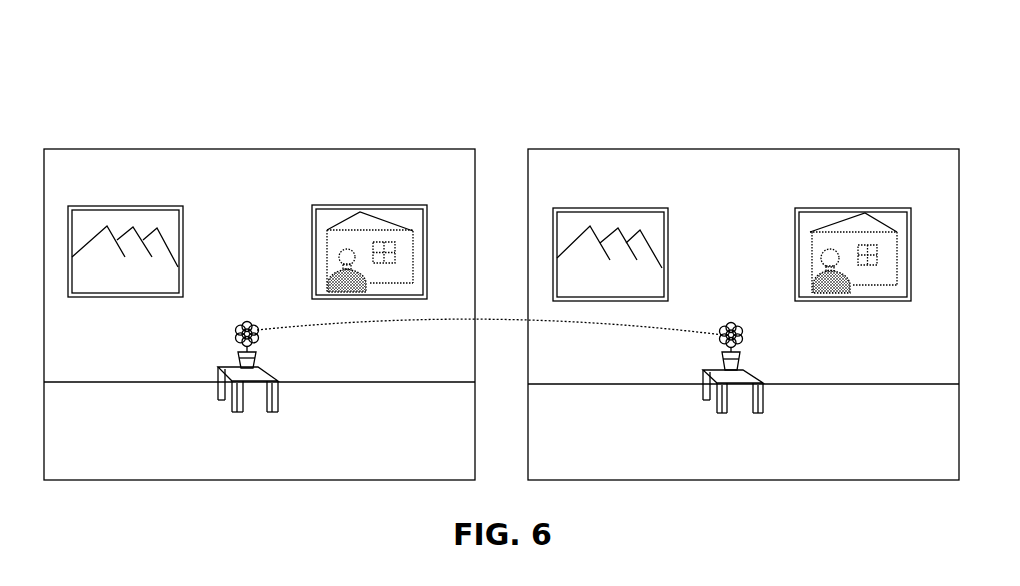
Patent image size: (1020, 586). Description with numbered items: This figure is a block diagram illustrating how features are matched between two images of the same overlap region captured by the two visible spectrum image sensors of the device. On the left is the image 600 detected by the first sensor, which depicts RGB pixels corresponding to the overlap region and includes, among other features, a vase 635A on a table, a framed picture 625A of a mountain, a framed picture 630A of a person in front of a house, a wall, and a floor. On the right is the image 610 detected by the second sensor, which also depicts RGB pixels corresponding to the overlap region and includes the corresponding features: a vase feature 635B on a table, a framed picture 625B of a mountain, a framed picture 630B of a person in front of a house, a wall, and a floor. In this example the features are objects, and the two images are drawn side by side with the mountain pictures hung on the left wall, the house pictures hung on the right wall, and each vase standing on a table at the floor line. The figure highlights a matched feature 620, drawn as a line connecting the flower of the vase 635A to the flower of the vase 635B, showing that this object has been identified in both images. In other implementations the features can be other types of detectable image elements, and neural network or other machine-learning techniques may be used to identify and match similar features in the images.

The image 600 is at (243, 148).
The image detected by second sensor 610 is at (747, 148).
The matched feature 620 is at (502, 321).
The framed picture of a mountain 625A is at (207, 247).
The framed picture of a mountain 625B is at (692, 250).
The framed picture of a person in front of a house 630A is at (311, 220).
The framed picture of a person in front of a house 630B is at (857, 301).
The vase 635A is at (255, 362).
The vase feature 635B is at (755, 347).